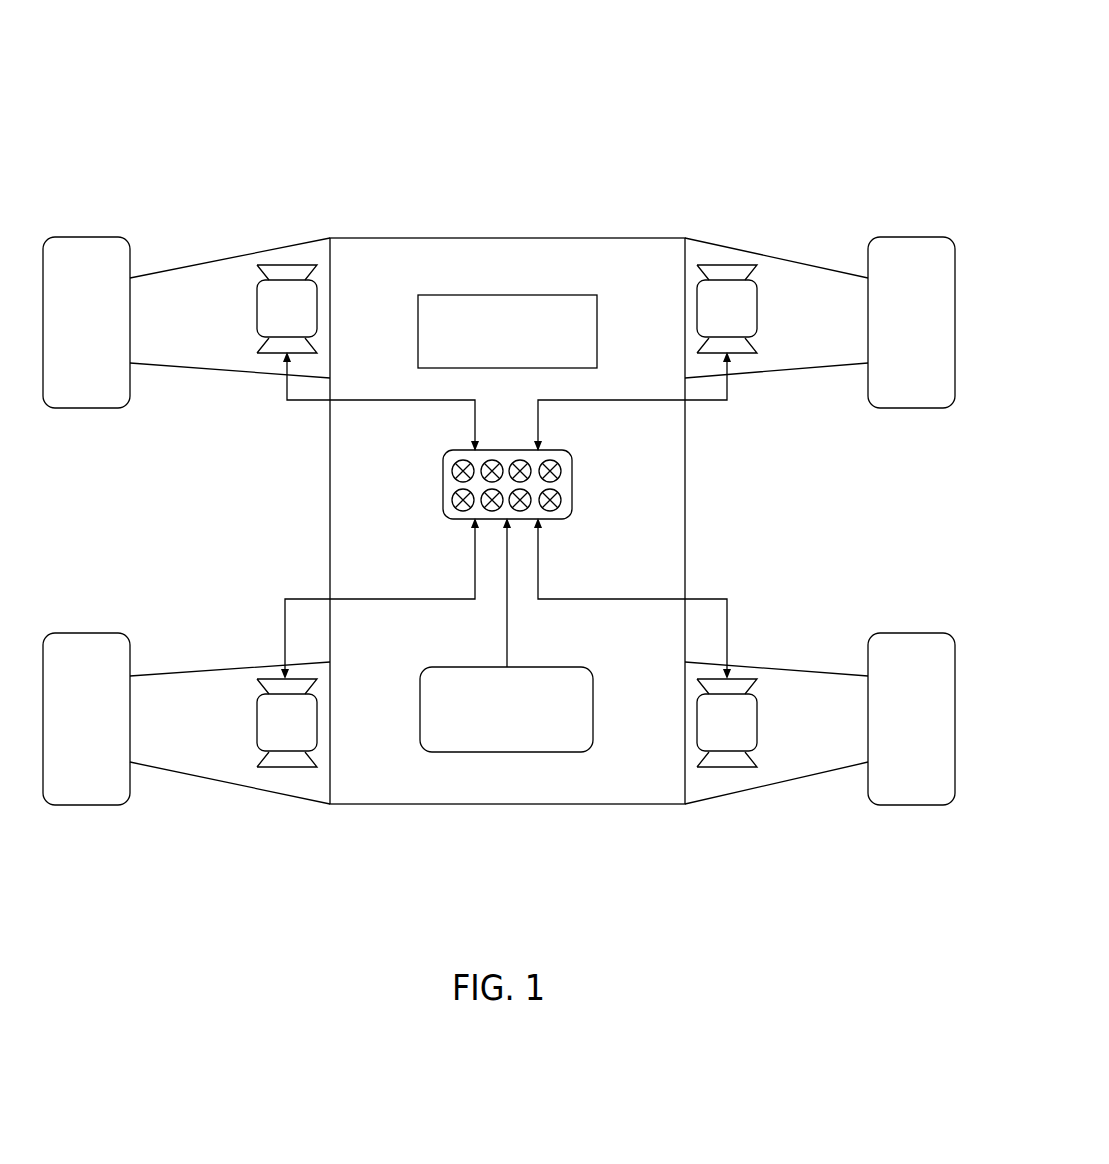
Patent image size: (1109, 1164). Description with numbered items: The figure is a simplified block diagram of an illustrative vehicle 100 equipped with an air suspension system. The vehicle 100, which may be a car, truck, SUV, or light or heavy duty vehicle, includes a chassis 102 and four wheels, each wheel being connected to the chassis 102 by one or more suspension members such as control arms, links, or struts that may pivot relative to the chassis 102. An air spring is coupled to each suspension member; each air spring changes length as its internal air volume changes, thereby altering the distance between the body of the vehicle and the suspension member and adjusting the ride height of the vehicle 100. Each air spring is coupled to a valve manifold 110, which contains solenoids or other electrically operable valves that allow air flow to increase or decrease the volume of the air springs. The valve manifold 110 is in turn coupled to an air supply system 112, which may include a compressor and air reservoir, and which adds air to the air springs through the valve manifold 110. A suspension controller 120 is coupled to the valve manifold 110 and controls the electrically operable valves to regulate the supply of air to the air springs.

The vehicle 100 is at (920, 92).
The chassis 102 is at (379, 253).
The valve manifold 110 is at (572, 497).
The air supply system 112 is at (593, 713).
The suspension controller 120 is at (597, 313).